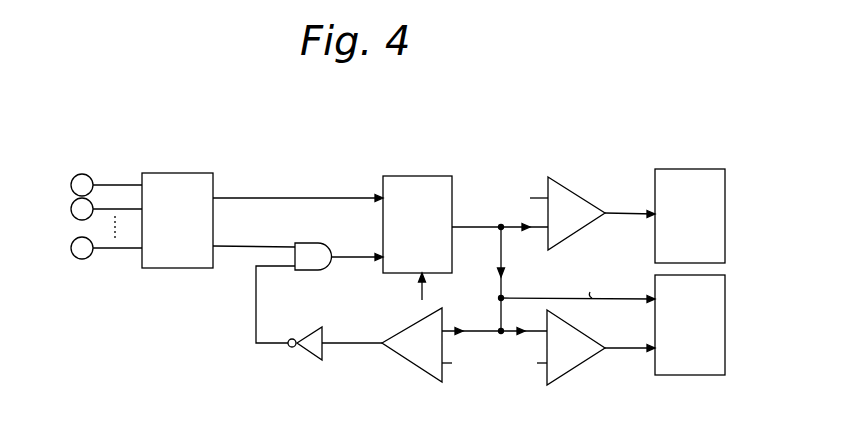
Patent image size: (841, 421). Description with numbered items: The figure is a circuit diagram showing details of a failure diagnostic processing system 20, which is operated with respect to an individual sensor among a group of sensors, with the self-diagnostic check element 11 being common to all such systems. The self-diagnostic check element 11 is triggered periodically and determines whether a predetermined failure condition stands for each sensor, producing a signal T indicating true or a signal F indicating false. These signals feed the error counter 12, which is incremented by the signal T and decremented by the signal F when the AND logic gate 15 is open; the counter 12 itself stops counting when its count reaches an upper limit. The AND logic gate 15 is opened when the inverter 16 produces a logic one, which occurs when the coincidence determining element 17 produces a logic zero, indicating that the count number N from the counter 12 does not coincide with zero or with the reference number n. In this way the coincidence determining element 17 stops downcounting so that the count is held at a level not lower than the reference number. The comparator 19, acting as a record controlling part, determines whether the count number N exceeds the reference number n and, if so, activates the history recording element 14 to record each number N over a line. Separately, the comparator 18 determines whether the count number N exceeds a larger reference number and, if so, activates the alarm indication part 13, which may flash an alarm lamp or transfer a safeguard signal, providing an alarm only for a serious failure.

The self-diagnostic check element 11 is at (179, 173).
The error counter 12 is at (432, 176).
The alarm indication part 13 is at (693, 168).
The history recording element 14 is at (690, 376).
The AND logic gate 15 is at (307, 243).
The inverter 16 is at (312, 357).
The coincidence determining element 17 is at (404, 356).
The comparator 18 is at (584, 197).
The comparator 19 is at (580, 371).
The failure diagnostic processing system 20 is at (322, 128).